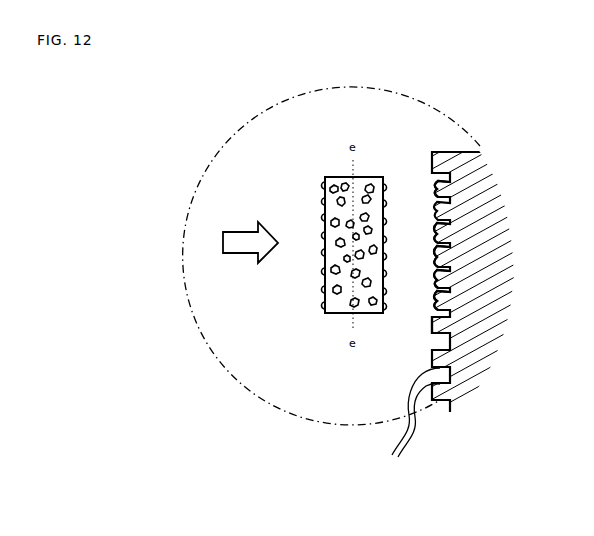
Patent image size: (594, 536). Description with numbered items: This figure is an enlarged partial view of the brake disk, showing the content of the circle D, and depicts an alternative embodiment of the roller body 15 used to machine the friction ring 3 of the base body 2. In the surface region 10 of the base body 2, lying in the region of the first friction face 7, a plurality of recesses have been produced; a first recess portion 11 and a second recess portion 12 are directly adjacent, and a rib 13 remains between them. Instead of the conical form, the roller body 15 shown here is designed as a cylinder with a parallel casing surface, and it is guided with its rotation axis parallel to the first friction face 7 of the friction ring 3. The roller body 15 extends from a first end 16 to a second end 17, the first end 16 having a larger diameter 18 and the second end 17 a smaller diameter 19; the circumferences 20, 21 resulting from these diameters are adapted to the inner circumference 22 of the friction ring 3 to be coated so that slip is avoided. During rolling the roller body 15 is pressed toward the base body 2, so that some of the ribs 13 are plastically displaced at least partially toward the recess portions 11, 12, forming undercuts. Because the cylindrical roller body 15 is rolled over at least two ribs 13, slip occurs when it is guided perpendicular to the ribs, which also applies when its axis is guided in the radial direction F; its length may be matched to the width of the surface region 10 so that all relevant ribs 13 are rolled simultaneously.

The base body 2 is at (326, 371).
The friction ring 3 is at (502, 205).
The first friction face 7 is at (389, 379).
The surface region 10 is at (330, 335).
The first recess portion 11 is at (449, 247).
The second recess portion 12 is at (451, 266).
The rib 13 is at (480, 258).
The roller body 15 is at (322, 176).
The first end 16 is at (446, 292).
The second end 17 is at (340, 262).
The larger diameter 18 is at (323, 228).
The smaller diameter 19 is at (430, 236).
The circumference 20 is at (426, 195).
The circumference 21 is at (436, 308).
The inner circumference 22 is at (410, 421).
The circle D is at (242, 130).
The radial direction F is at (240, 242).